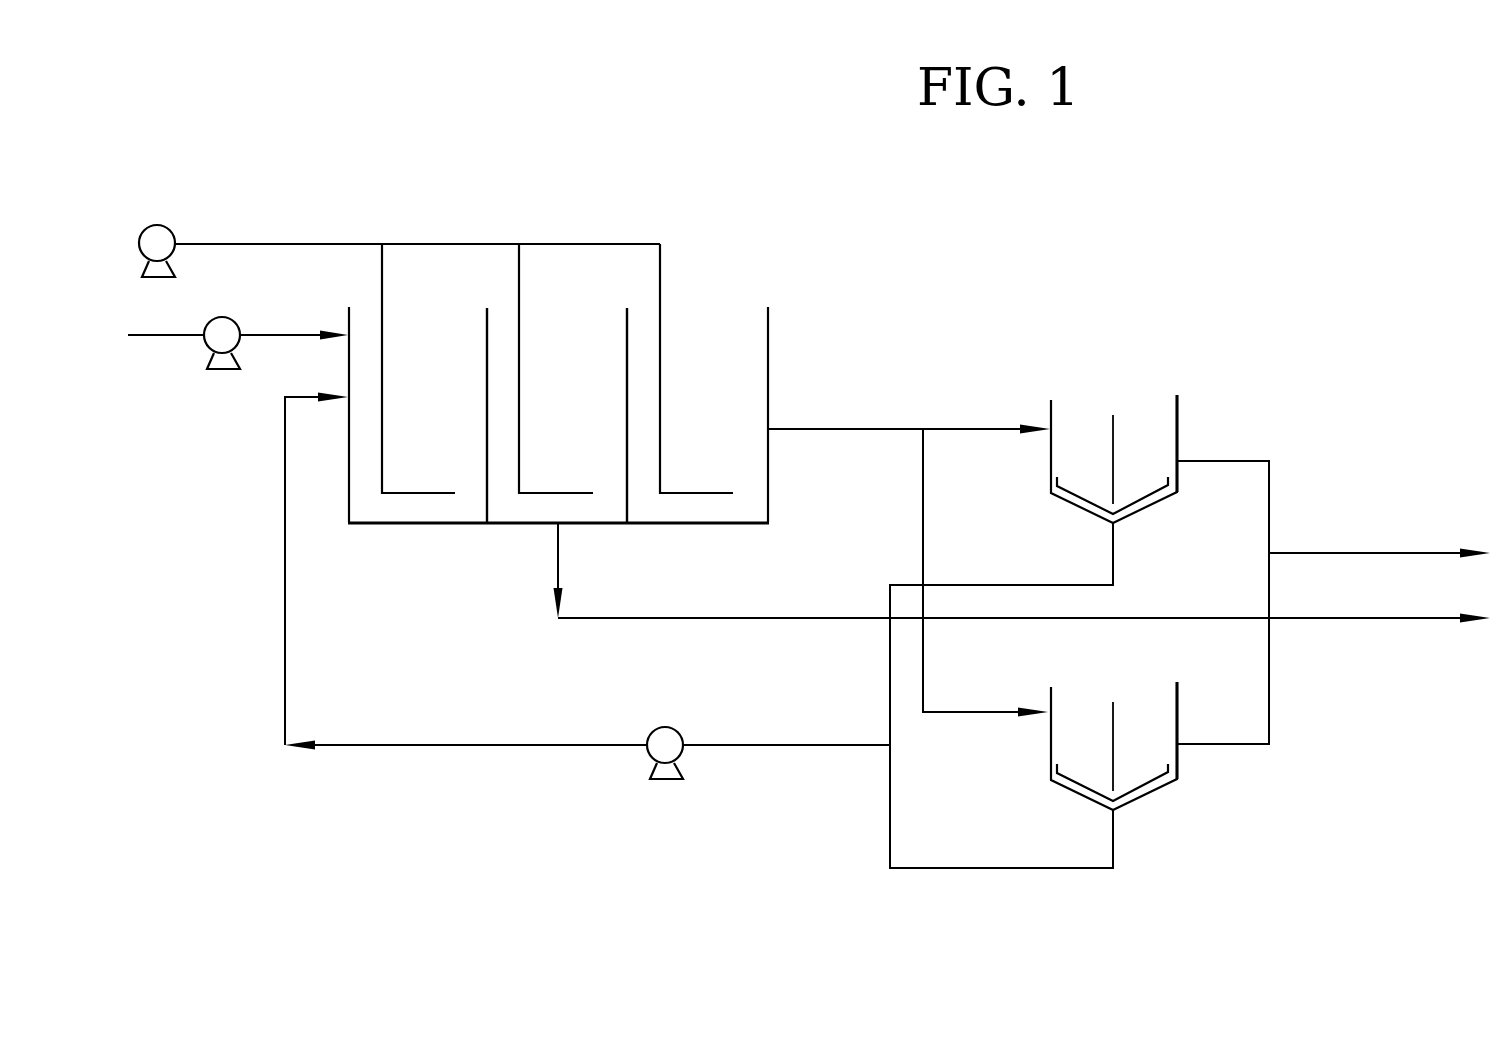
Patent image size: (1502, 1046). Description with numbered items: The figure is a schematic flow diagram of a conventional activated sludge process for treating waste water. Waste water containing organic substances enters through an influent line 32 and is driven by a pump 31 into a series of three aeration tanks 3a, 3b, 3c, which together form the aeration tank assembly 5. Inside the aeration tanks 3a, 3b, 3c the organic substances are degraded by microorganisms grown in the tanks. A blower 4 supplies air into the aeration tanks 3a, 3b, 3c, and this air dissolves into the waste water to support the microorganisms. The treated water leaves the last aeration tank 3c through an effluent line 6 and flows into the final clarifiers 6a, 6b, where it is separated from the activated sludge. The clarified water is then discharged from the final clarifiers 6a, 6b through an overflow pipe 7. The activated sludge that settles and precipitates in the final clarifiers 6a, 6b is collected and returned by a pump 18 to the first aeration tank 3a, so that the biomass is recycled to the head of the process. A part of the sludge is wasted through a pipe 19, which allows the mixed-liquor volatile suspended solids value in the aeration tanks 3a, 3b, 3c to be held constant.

The aeration tank 3a is at (453, 449).
The aeration tank 3b is at (588, 449).
The aeration tank 3c is at (727, 449).
The blower 4 is at (168, 240).
The reactor tank 5 is at (490, 231).
The effluent line 6 is at (880, 429).
The final clarifier 6a is at (1101, 451).
The final clarifier 6b is at (1099, 734).
The overflow pipe 7 is at (1372, 553).
The pump 18 is at (672, 741).
The pipe 19 is at (757, 618).
The pump 31 is at (232, 329).
The influent line 32 is at (175, 337).